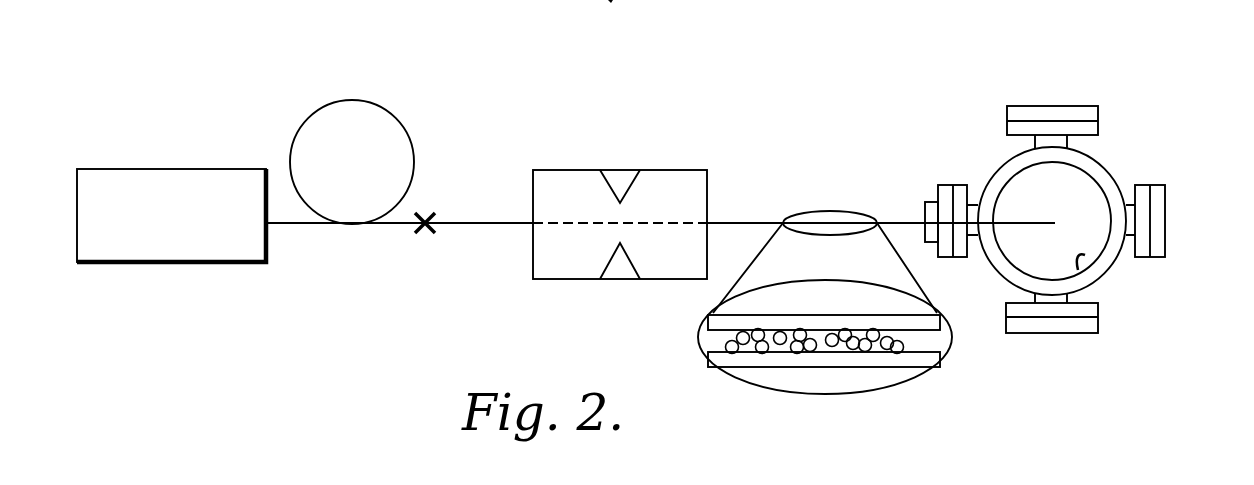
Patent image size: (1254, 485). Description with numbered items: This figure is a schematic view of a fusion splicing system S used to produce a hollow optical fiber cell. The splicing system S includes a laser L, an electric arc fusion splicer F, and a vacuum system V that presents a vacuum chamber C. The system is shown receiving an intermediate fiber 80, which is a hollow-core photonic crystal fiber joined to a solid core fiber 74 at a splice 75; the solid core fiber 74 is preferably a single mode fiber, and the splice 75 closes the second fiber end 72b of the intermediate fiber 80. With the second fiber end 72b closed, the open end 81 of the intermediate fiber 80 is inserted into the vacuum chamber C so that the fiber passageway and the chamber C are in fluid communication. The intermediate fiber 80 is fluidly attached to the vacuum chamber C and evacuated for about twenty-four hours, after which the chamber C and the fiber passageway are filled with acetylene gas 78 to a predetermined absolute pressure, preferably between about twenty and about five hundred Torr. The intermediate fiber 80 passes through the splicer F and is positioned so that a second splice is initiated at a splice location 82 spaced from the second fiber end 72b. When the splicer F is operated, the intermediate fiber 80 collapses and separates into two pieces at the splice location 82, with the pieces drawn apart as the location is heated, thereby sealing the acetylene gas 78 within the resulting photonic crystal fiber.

The laser L is at (145, 169).
The solid core fiber 74 is at (380, 103).
The splice 75 is at (427, 213).
The second fiber end 72b is at (410, 250).
The intermediate fiber 80 is at (493, 223).
The electric arc fusion splicer F is at (622, 267).
The splice location 82 is at (645, 207).
The fusion splicing system S is at (803, 105).
The acetylene gas 78 is at (832, 340).
The vacuum system V is at (1097, 160).
The open end 81 is at (1056, 221).
The vacuum chamber C is at (1085, 255).